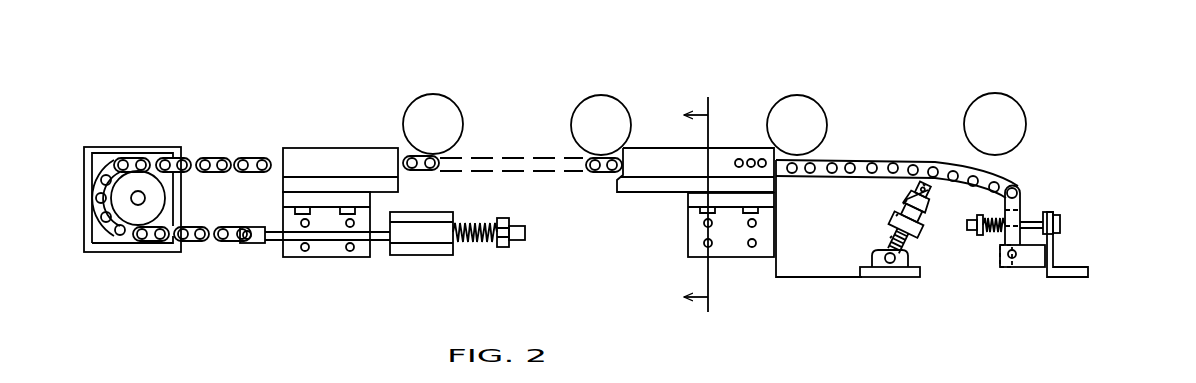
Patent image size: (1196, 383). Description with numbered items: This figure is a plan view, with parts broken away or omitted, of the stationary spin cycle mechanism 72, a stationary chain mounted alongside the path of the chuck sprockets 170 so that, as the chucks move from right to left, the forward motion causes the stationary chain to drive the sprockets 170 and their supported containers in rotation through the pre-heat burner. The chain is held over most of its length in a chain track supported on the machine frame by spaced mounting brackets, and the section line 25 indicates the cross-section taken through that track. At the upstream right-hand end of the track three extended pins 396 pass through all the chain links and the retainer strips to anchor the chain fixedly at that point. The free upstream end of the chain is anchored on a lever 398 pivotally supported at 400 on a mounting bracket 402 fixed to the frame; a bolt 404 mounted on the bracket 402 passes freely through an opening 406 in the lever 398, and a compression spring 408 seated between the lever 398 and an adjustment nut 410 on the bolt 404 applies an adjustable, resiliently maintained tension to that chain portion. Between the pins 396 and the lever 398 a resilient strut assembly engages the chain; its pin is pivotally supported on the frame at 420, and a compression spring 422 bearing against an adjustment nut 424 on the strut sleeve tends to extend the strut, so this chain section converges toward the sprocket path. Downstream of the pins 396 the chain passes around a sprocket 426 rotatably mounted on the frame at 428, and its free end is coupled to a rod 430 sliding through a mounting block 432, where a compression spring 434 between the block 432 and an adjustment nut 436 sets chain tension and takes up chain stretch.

The section line 25 is at (708, 203).
The spin cycle mechanism 72 is at (467, 127).
The chuck sprocket 170 is at (1010, 110).
The extended pins 396 is at (762, 158).
The lever 398 is at (1022, 212).
The pivot 400 is at (1012, 262).
The mounting bracket 402 is at (1055, 258).
The bolt 404 is at (1060, 226).
The opening 406 is at (1000, 247).
The compression spring 408 is at (994, 214).
The adjustment nut 410 is at (908, 244).
The pivot support 420 is at (888, 277).
The compression spring 422 is at (910, 253).
The adjustment nut 424 is at (903, 206).
The sprocket 426 is at (152, 224).
The sprocket mounting 428 is at (146, 197).
The rod 430 is at (283, 243).
The mounting block 432 is at (422, 238).
The compression spring 434 is at (482, 248).
The adjustment nut 436 is at (521, 225).